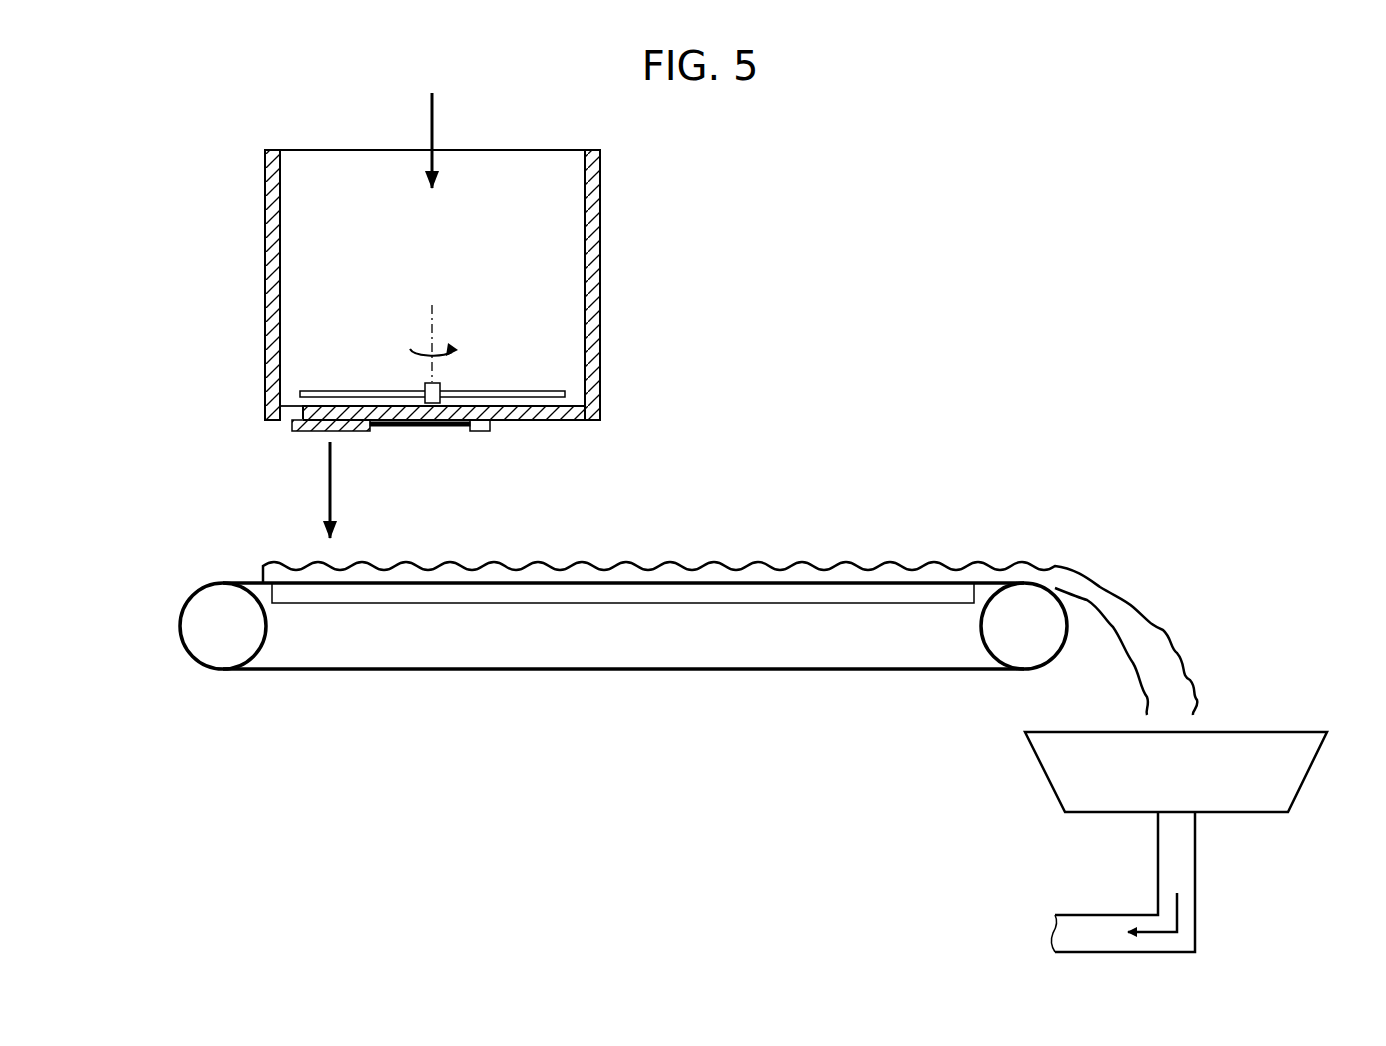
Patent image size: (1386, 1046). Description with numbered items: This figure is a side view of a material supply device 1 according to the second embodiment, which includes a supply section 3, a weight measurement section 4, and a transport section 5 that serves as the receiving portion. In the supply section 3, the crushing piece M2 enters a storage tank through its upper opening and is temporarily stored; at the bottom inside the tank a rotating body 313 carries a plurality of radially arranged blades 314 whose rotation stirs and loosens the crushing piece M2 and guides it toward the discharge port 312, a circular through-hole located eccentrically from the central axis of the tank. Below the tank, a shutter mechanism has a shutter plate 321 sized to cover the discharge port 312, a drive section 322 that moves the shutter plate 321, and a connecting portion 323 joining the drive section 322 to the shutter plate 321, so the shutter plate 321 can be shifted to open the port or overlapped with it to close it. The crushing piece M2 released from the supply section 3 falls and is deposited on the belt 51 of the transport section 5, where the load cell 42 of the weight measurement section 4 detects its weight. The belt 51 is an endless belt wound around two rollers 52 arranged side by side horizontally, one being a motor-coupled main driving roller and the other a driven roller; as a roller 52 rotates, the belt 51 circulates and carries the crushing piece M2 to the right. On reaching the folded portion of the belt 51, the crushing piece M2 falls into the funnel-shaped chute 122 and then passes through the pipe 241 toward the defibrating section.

The material supply device 1 is at (130, 87).
The supply section 3 is at (255, 144).
The discharge port 312 is at (303, 408).
The rotating body 313 is at (537, 391).
The blade 314 is at (328, 391).
The shutter plate 321 is at (315, 428).
The drive section 322 is at (477, 432).
The connecting portion 323 is at (450, 427).
The weight measurement section 4 is at (665, 762).
The load cell 42 is at (748, 596).
The transport section 5 is at (676, 681).
The belt 51 is at (663, 583).
The roller 52 is at (215, 620).
The chute 122 is at (1298, 774).
The pipe 241 is at (1085, 922).
The crushing piece M2 is at (434, 119).